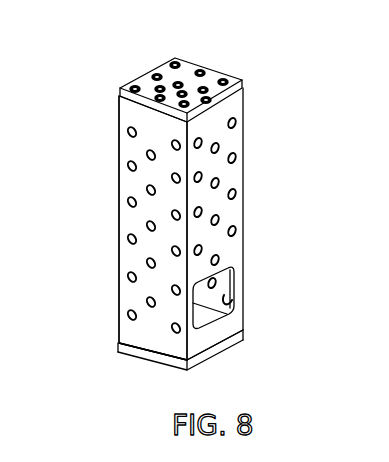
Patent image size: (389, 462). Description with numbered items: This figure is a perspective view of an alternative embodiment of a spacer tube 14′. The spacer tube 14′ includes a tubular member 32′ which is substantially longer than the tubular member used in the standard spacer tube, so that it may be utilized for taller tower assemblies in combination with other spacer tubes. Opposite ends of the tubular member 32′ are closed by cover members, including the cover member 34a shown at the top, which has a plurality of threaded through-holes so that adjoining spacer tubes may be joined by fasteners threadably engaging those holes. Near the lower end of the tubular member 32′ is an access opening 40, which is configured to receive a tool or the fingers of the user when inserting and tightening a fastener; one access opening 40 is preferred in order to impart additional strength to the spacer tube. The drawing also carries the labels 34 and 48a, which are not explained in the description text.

The spacer tube 14′ is at (243, 127).
The cover member 34a is at (172, 62).
The base plate 34 is at (128, 355).
The tubular member 32′ is at (118, 280).
The side openings / holes 48a is at (234, 194).
The access opening 40 is at (235, 288).